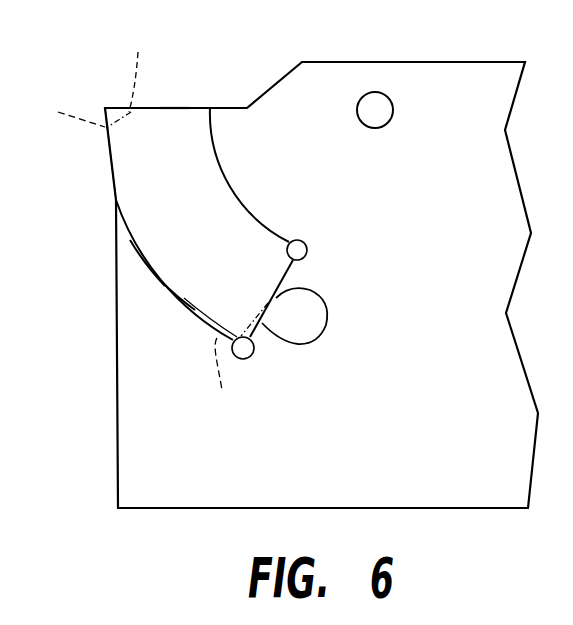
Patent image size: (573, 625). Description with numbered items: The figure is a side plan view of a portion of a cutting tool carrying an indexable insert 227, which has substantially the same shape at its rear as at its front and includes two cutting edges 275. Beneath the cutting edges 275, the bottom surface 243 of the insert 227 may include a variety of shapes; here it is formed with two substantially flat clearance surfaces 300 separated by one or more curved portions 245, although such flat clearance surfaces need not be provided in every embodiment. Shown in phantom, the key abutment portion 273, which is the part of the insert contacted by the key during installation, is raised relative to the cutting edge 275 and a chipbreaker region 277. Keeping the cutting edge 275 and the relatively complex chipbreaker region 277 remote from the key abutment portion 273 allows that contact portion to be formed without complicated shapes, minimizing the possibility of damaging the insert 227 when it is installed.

The indexable insert 227 is at (203, 206).
The bottom surface 243 is at (161, 284).
The curved portion 245 is at (147, 262).
The key abutment portion 273 is at (175, 108).
The cutting edge 275 is at (105, 108).
The chipbreaker region 277 is at (138, 54).
The flat clearance surface 300 is at (108, 154).